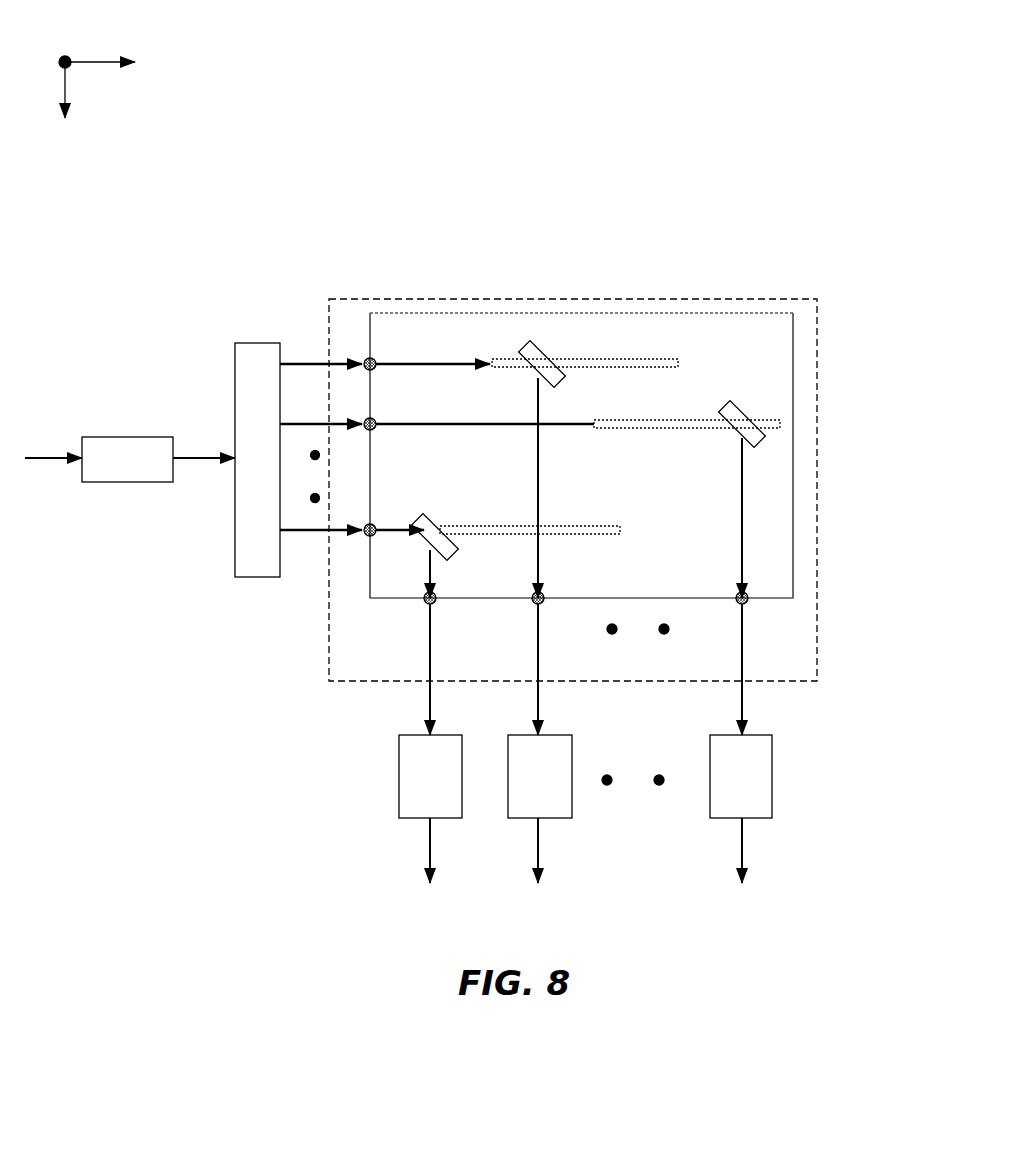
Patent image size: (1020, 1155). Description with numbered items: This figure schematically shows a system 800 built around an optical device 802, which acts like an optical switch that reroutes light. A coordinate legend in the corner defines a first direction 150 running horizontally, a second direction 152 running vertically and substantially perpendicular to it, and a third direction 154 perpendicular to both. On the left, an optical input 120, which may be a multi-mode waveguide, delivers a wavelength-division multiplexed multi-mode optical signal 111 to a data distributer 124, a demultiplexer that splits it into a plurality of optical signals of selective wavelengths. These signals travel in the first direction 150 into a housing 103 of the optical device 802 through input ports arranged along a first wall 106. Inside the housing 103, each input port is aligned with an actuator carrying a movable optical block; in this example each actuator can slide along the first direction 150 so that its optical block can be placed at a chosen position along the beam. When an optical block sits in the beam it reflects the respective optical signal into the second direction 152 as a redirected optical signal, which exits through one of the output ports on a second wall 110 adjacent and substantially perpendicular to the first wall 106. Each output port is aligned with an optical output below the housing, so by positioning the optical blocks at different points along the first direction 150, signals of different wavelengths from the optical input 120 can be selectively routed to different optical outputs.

The third direction 154 is at (65, 56).
The first direction 150 is at (115, 47).
The second direction 152 is at (90, 94).
The system 800 is at (546, 140).
The optical device 802 is at (458, 297).
The housing 103 is at (643, 310).
The first wall 106 is at (372, 580).
The second wall 110 is at (775, 598).
The optical input 120 is at (99, 459).
The multi-mode optical signal 111 is at (47, 450).
The data distributer 124 is at (235, 548).